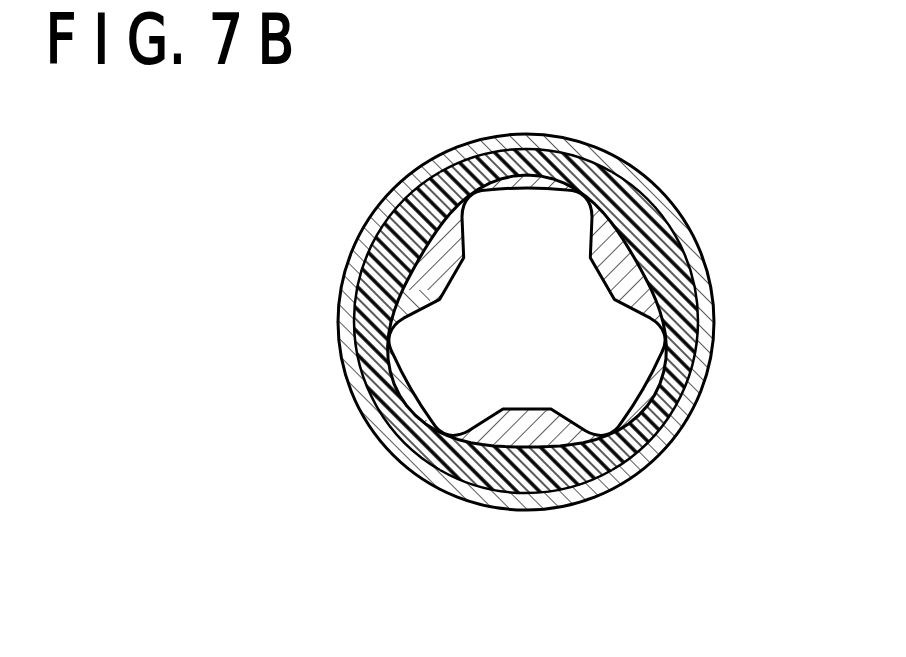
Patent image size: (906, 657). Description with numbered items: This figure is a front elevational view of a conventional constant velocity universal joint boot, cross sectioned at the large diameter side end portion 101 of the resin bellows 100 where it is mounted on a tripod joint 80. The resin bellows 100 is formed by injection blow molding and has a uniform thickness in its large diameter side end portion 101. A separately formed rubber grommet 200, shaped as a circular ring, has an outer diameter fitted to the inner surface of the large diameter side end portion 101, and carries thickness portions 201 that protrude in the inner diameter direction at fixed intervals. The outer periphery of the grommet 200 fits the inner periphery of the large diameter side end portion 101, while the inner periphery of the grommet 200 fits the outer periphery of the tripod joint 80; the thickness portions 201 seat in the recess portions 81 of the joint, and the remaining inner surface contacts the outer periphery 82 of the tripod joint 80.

The resin bellows 100 is at (410, 172).
The rubber grommet 200 is at (712, 297).
The thickness portions 201 is at (700, 257).
The large diameter side end portion 101 is at (626, 185).
The tripod joint 80 is at (529, 341).
The recess portion 81 is at (388, 233).
The outer periphery 82 is at (536, 160).